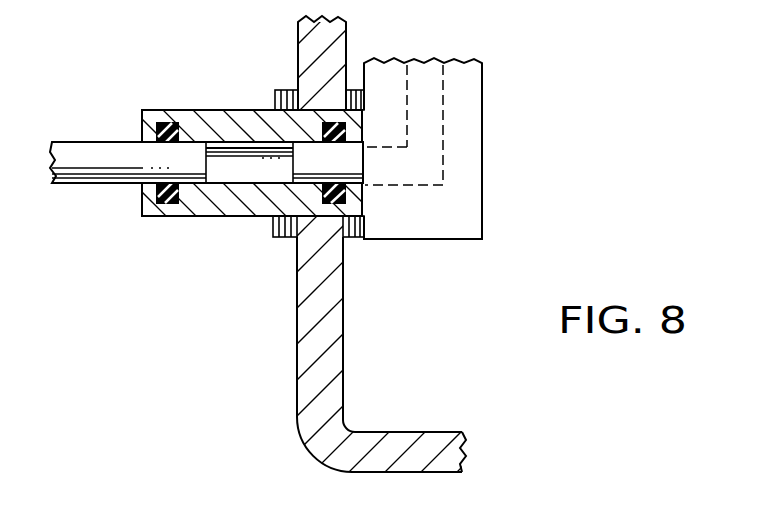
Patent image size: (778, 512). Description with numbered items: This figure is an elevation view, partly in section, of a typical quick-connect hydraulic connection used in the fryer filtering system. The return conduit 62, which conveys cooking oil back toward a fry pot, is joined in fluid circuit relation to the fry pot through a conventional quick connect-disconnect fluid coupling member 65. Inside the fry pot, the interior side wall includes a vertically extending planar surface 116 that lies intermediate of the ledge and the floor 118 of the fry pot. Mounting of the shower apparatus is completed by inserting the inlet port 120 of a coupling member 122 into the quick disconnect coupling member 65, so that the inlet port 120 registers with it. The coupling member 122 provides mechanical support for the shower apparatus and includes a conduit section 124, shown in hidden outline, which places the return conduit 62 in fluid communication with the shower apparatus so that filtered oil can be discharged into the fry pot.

The return conduit 62 is at (83, 150).
The quick connect-disconnect fluid coupling member 65 is at (213, 206).
The vertically extending planar surface 116 is at (301, 319).
The floor 118 is at (434, 442).
The inlet port 120 is at (305, 167).
The coupling member 122 is at (468, 92).
The conduit section 124 is at (442, 112).